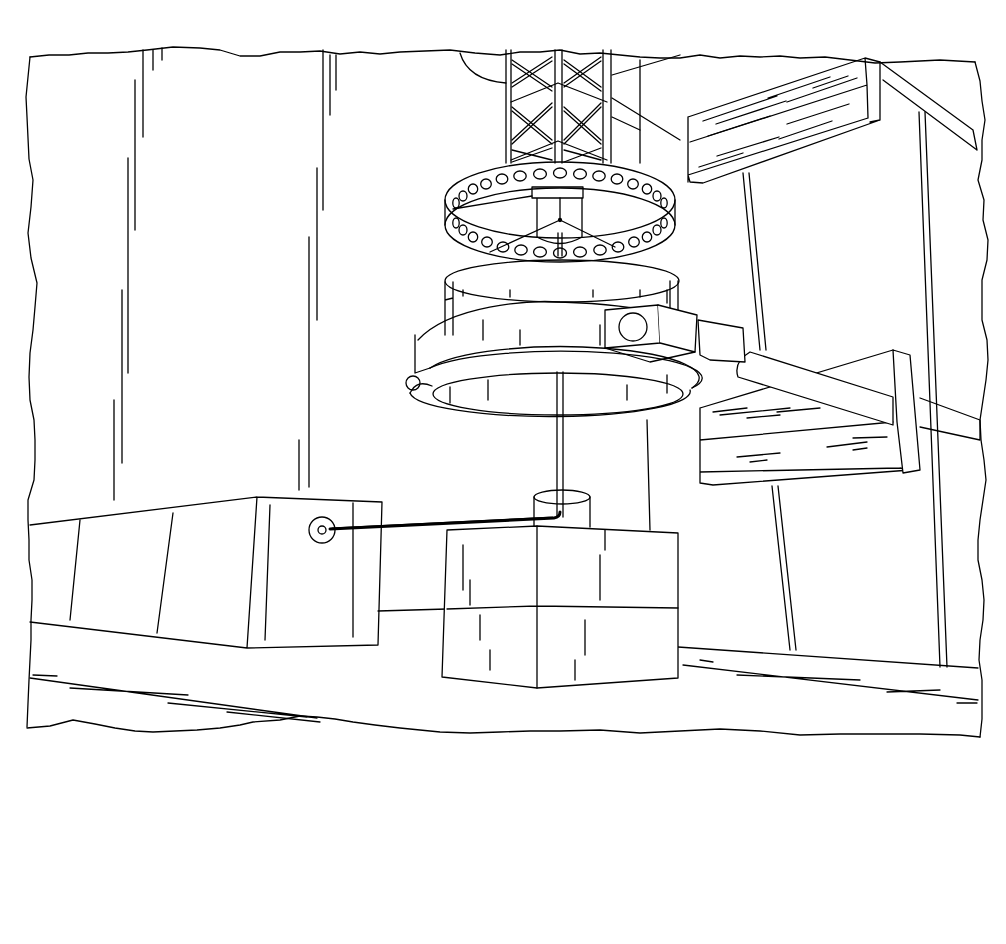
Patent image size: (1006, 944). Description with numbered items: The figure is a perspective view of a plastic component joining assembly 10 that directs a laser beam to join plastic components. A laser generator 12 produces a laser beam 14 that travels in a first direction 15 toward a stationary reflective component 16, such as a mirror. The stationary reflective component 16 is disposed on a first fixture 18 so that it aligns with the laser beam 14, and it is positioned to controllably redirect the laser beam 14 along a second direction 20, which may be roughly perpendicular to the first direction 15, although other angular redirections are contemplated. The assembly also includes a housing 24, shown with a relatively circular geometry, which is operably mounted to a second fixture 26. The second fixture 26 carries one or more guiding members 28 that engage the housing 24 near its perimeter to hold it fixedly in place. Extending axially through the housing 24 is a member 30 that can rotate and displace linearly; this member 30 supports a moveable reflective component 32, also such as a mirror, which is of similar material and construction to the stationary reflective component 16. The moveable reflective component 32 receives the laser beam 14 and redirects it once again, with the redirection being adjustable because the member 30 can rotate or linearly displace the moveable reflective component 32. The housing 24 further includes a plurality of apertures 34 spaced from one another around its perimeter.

The plastic component joining assembly 10 is at (437, 34).
The laser generator 12 is at (135, 545).
The laser beam 14 is at (412, 520).
The first direction 15 is at (442, 522).
The stationary reflective component 16 is at (590, 503).
The first fixture 18 is at (597, 645).
The second direction 20 is at (556, 440).
The housing 24 is at (686, 203).
The second fixture 26 is at (893, 297).
The guiding member 28 is at (437, 343).
The member 30 is at (448, 212).
The moveable reflective component 32 is at (662, 256).
The apertures 34 is at (453, 242).